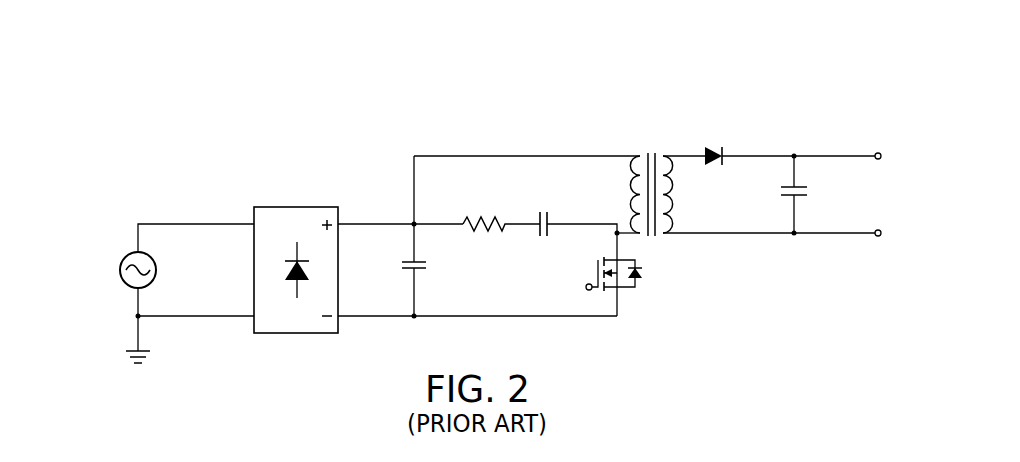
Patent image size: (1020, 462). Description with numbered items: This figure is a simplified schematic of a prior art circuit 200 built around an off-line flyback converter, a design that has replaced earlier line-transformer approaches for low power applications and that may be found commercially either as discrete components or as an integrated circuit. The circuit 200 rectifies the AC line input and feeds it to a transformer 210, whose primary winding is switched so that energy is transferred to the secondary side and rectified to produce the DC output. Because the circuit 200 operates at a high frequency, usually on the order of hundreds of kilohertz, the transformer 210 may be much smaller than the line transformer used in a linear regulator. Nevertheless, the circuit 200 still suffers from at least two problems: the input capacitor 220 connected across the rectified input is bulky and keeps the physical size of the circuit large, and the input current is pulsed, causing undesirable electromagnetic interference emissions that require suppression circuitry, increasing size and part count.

The circuit 200 is at (500, 205).
The transformer 210 is at (664, 236).
The input capacitor 220 is at (408, 271).